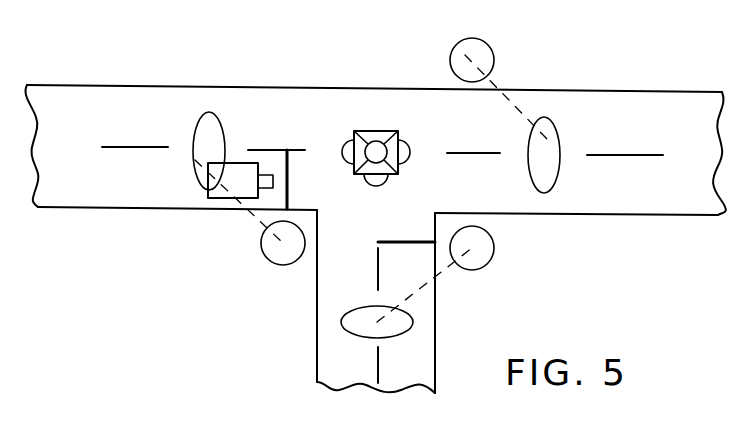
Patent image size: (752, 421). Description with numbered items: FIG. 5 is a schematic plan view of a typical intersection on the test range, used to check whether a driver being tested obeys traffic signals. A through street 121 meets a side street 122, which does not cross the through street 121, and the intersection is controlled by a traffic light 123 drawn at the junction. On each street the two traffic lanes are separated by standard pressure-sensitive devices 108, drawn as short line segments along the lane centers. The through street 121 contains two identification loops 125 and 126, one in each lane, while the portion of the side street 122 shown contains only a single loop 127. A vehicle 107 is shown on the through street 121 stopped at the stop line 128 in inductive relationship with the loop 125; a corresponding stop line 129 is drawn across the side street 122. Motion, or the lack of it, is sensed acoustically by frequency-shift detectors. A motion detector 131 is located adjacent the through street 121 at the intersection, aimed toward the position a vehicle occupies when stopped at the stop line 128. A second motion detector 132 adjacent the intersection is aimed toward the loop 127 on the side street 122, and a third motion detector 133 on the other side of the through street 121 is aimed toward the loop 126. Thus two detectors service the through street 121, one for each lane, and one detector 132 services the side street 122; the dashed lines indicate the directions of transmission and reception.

The vehicle 107 is at (208, 187).
The pressure-sensitive devices 108 is at (300, 149).
The through street 121 is at (284, 91).
The side street 122 is at (316, 309).
The traffic light 123 is at (376, 131).
The identification loop 125 is at (196, 139).
The identification loop 126 is at (556, 152).
The loop 127 is at (368, 336).
The stop line 128 is at (288, 203).
The stop 129 is at (428, 241).
The motion detector 131 is at (265, 250).
The second motion detector 132 is at (490, 256).
The third motion detector 133 is at (492, 53).